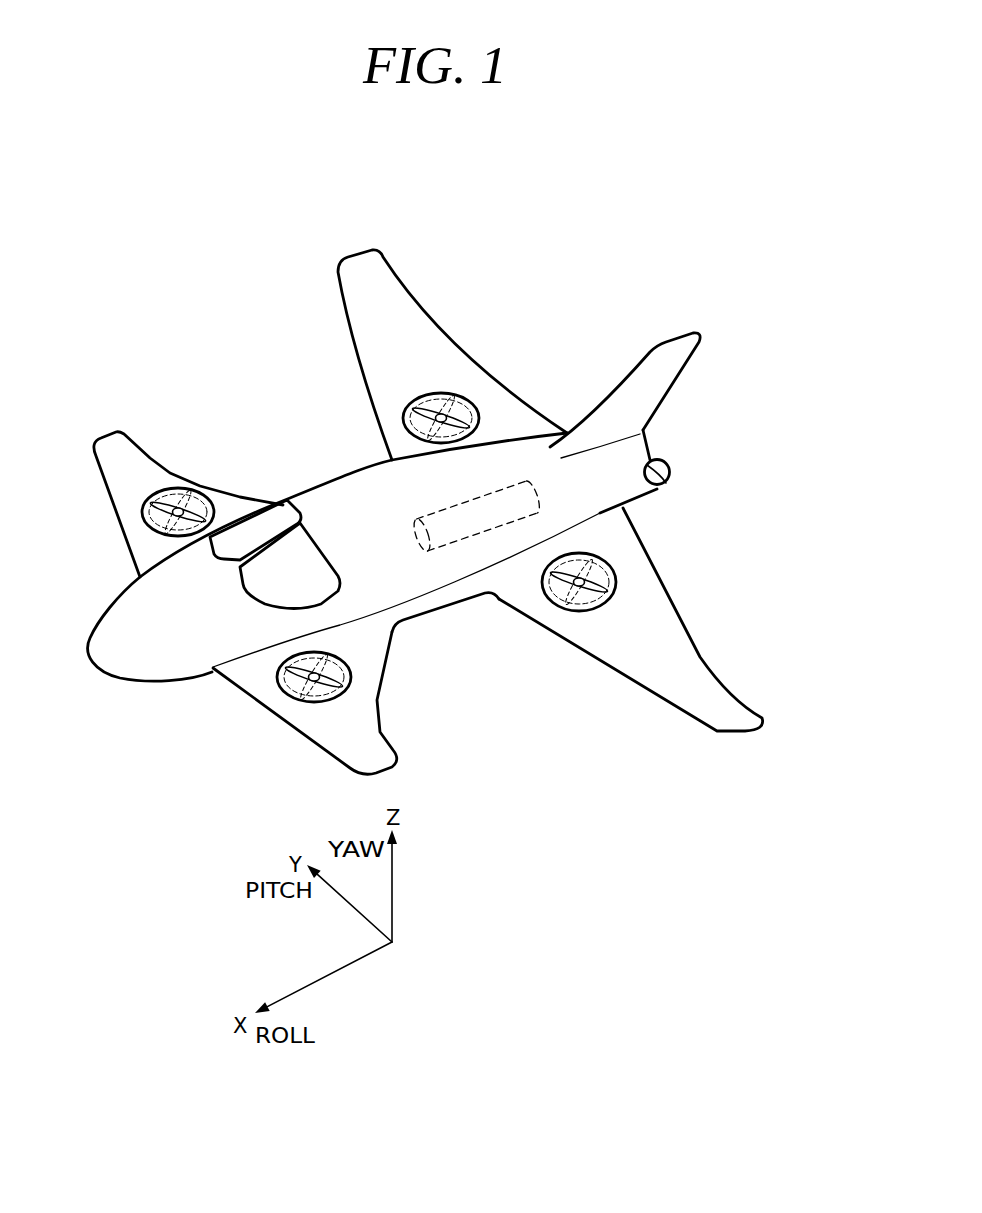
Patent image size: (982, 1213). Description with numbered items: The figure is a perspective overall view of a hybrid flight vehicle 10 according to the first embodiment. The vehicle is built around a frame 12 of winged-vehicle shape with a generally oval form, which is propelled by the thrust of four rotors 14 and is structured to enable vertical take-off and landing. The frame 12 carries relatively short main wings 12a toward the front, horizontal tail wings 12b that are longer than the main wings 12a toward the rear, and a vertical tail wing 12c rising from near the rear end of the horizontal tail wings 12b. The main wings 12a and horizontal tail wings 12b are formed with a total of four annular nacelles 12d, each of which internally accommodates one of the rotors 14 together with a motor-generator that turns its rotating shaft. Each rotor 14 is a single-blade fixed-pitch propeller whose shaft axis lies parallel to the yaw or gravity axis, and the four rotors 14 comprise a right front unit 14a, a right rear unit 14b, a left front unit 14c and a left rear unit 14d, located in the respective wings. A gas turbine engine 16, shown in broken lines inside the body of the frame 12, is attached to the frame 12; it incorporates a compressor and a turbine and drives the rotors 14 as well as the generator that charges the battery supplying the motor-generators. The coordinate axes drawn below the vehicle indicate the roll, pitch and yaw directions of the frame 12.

The hybrid flight vehicle 10 is at (618, 273).
The frame 12 is at (130, 648).
The main wings 12a is at (377, 745).
The horizontal tail wings 12b is at (713, 700).
The vertical tail wing 12c is at (677, 353).
The annular nacelles 12d is at (157, 497).
The rotors 14 is at (489, 522).
The right front (RF) unit 14a is at (193, 510).
The right rear (RR) unit 14b is at (423, 407).
The left front (LF) unit 14c is at (287, 677).
The left rear (LR) unit 14d is at (587, 588).
The gas turbine engine 16 is at (483, 493).